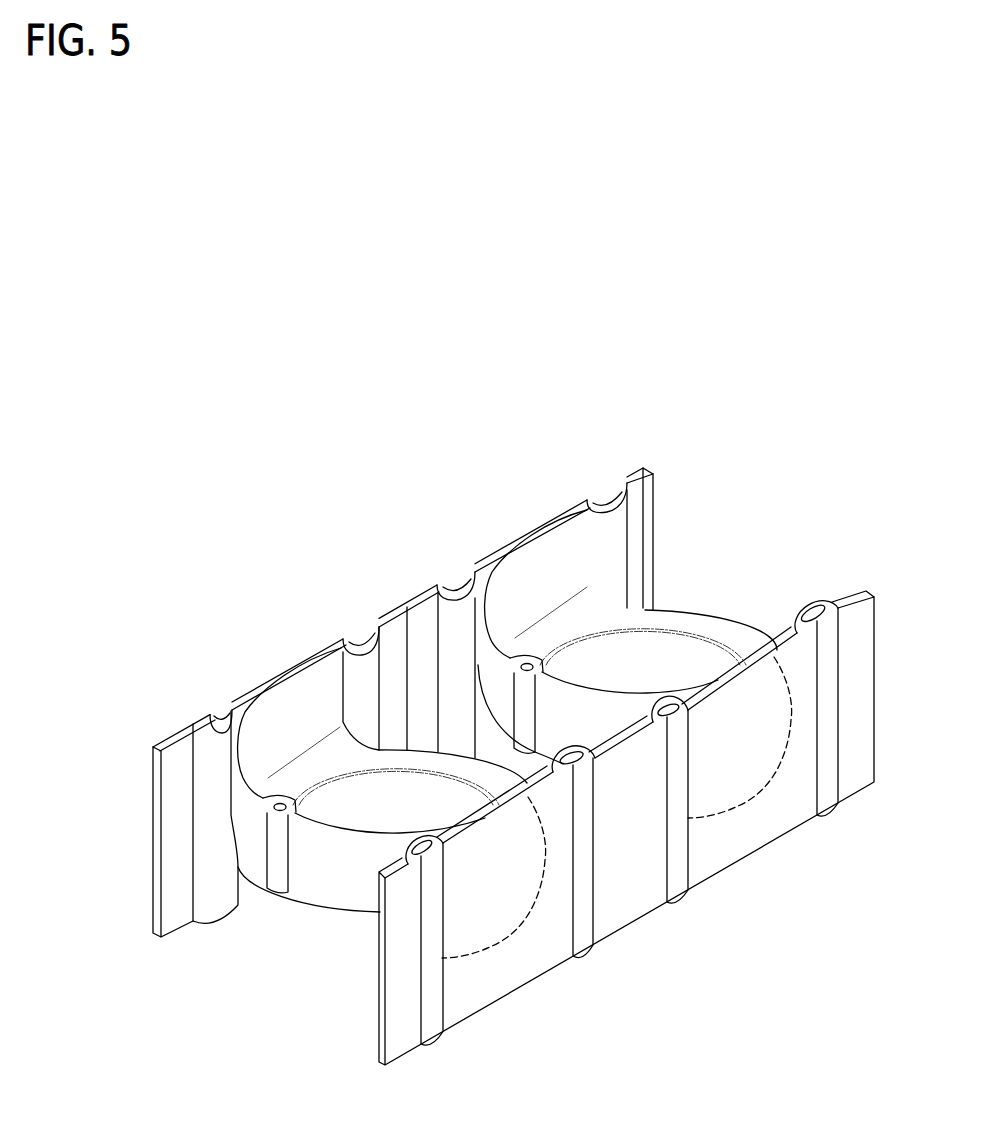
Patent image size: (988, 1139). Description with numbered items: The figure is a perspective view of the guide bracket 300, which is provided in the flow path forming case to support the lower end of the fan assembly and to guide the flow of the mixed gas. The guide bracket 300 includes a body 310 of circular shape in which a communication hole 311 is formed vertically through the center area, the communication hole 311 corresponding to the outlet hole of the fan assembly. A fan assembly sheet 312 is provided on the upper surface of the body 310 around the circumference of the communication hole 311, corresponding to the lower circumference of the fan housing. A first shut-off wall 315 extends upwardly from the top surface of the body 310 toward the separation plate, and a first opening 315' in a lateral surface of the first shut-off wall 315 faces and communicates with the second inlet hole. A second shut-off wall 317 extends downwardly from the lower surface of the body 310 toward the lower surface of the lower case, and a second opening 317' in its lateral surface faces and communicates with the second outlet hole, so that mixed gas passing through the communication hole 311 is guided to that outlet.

The guide bracket 300 is at (394, 572).
The body 310 is at (723, 650).
The communication hole 311 is at (644, 668).
The fan assembly sheet 312 is at (703, 627).
The first shut-off wall 315 is at (521, 597).
The first opening 315' is at (664, 501).
The second shut-off wall 317 is at (793, 759).
The second opening 317' is at (502, 900).